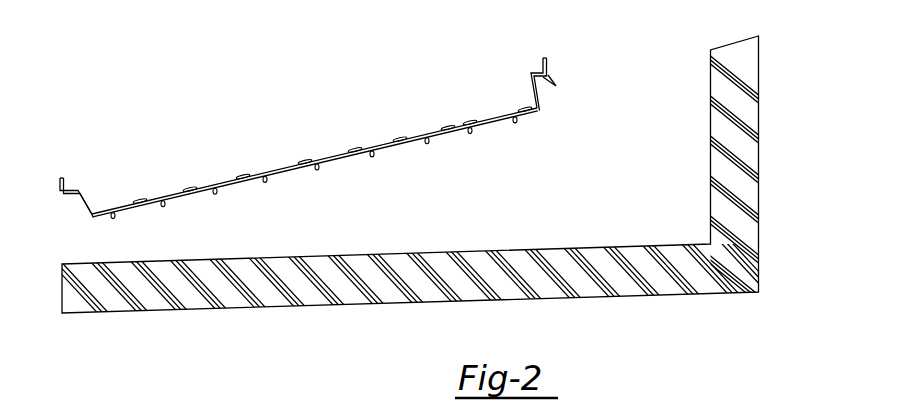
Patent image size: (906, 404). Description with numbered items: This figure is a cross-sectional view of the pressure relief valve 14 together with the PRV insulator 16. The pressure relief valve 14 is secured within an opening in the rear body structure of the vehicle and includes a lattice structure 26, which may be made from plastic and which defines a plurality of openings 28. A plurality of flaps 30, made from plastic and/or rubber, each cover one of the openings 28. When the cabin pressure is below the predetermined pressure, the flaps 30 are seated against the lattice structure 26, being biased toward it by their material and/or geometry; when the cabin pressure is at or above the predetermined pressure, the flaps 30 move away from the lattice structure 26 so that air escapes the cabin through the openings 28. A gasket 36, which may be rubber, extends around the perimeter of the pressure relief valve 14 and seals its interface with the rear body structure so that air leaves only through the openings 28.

The pressure relief valve 14 is at (343, 130).
The PRV insulator 16 is at (788, 195).
The lattice structure 26 is at (543, 90).
The openings 28 is at (500, 125).
The flaps 30 is at (488, 115).
The gasket 36 is at (58, 203).